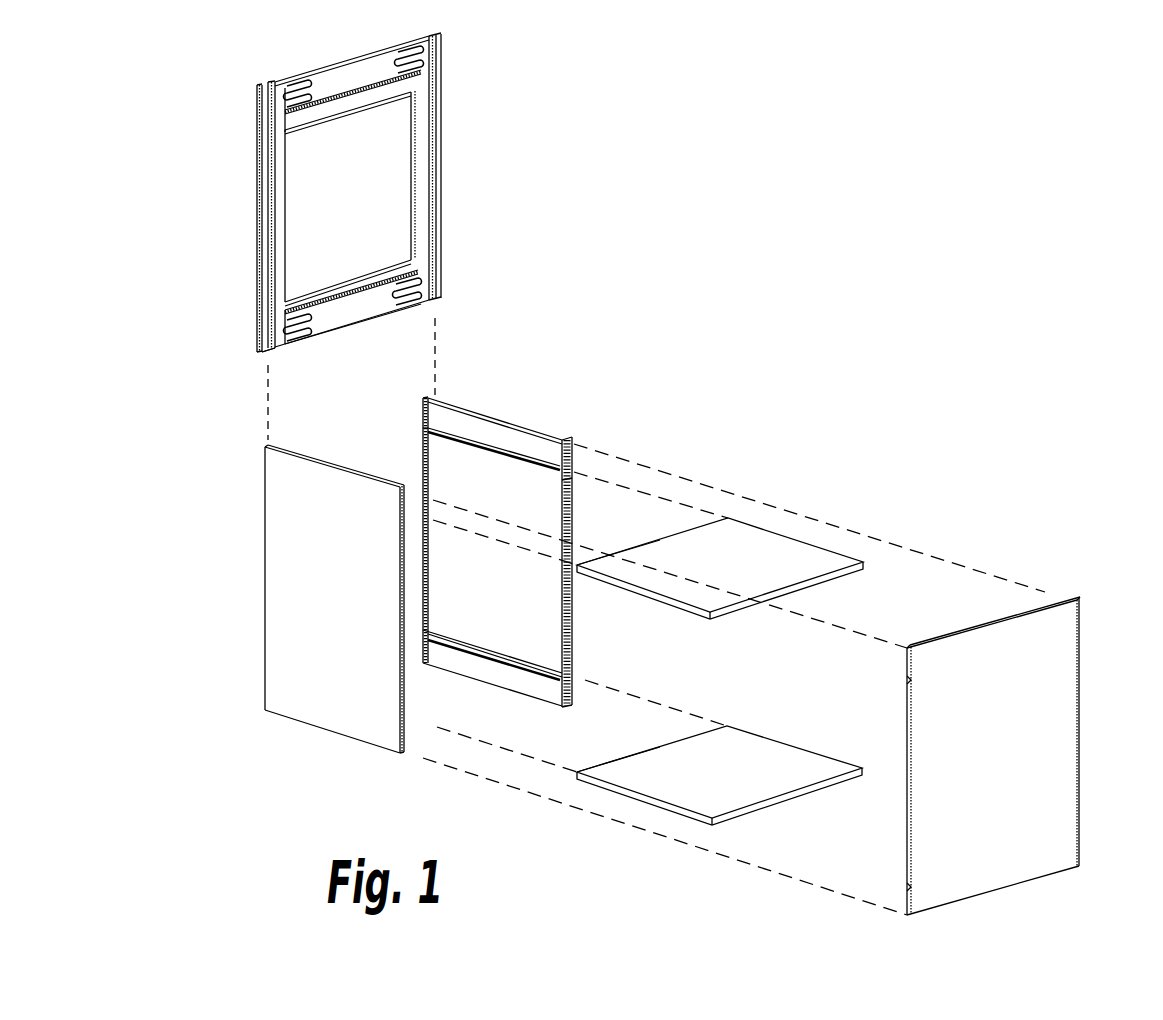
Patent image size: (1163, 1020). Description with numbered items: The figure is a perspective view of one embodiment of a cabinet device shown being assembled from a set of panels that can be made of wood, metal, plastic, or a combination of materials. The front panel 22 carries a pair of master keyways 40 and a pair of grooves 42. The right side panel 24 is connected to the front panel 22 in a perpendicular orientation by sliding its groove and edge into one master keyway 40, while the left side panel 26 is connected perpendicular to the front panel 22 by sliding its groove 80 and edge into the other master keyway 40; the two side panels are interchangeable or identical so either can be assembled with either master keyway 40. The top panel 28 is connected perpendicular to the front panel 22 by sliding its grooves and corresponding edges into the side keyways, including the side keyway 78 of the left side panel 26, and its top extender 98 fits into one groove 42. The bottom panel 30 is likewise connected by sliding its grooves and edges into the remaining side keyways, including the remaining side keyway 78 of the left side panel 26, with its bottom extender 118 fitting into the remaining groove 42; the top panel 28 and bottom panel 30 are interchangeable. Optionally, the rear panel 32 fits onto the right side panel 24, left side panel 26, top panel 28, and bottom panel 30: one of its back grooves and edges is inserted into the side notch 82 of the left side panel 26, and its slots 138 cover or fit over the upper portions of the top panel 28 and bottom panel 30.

The front panel 22 is at (375, 229).
The right side panel 24 is at (288, 553).
The left side panel 26 is at (488, 542).
The top panel 28 is at (720, 526).
The bottom panel 30 is at (719, 754).
The rear panel 32 is at (974, 756).
The master keyway 40 is at (431, 272).
The groove 42 is at (331, 93).
The side keyway 78 is at (535, 467).
The groove 80 is at (424, 412).
The side notch 82 is at (570, 503).
The top extender 98 is at (683, 525).
The bottom extender 118 is at (606, 760).
The slots 138 is at (906, 680).